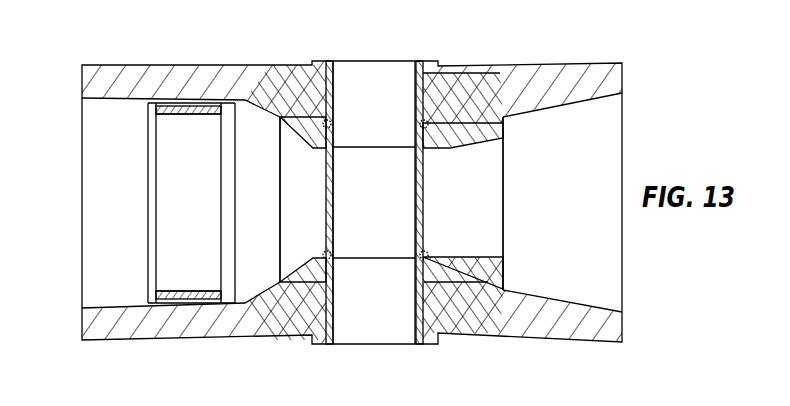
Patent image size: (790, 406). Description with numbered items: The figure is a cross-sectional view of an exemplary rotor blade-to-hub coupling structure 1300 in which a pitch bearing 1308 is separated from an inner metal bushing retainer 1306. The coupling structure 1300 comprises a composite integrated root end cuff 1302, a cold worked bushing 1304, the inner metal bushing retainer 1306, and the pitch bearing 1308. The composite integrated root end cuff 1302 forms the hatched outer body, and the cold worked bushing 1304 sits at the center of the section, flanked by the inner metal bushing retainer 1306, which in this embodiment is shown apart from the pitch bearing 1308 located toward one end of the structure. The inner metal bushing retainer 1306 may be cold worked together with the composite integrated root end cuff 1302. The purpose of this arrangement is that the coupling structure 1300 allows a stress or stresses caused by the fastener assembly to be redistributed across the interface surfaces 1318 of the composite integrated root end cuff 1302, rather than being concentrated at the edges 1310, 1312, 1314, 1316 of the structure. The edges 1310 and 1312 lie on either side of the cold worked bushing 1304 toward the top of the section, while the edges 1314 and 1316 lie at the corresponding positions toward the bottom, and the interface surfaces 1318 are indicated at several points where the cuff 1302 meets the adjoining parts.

The rotor blade-to-hub coupling structure 1300 is at (112, 42).
The composite integrated root end cuff 1302 is at (558, 78).
The cold worked bushing 1304 is at (365, 72).
The inner metal bushing retainer 1306 is at (493, 202).
The pitch bearing 1308 is at (168, 197).
The edge 1310 is at (323, 112).
The edge 1312 is at (427, 121).
The edge 1314 is at (318, 265).
The edge 1316 is at (425, 262).
The interface surfaces 1318 is at (292, 118).